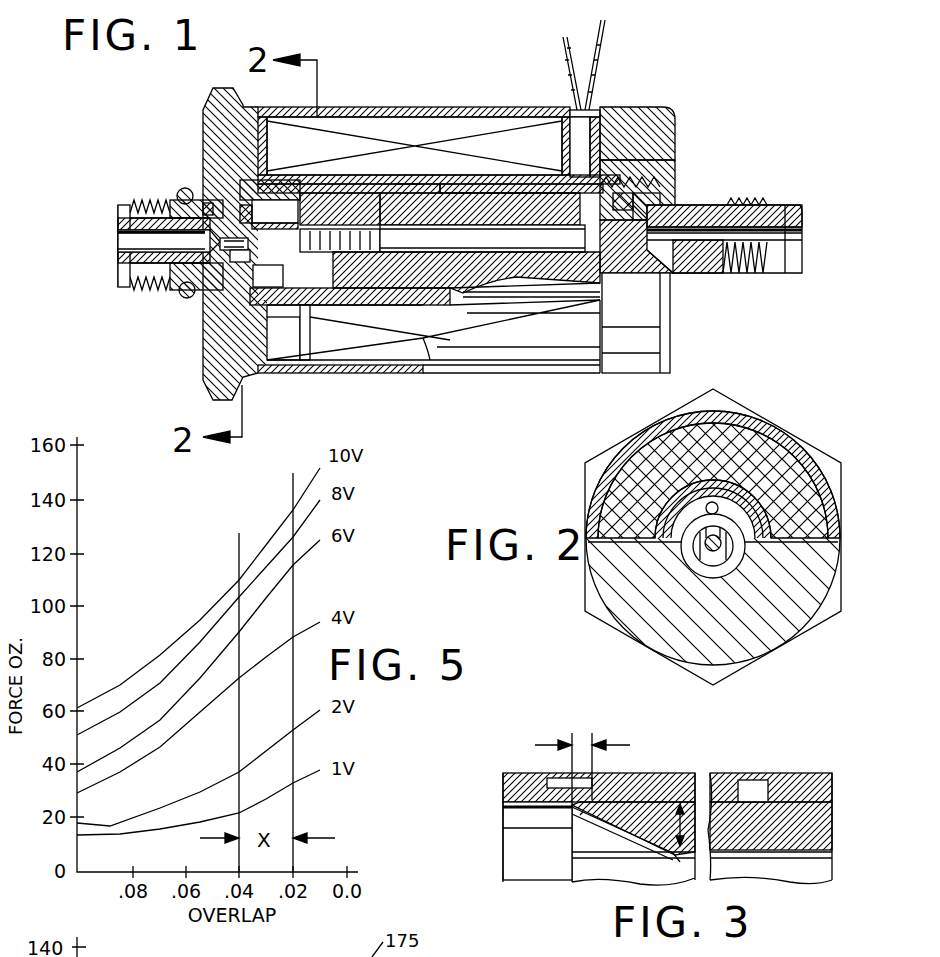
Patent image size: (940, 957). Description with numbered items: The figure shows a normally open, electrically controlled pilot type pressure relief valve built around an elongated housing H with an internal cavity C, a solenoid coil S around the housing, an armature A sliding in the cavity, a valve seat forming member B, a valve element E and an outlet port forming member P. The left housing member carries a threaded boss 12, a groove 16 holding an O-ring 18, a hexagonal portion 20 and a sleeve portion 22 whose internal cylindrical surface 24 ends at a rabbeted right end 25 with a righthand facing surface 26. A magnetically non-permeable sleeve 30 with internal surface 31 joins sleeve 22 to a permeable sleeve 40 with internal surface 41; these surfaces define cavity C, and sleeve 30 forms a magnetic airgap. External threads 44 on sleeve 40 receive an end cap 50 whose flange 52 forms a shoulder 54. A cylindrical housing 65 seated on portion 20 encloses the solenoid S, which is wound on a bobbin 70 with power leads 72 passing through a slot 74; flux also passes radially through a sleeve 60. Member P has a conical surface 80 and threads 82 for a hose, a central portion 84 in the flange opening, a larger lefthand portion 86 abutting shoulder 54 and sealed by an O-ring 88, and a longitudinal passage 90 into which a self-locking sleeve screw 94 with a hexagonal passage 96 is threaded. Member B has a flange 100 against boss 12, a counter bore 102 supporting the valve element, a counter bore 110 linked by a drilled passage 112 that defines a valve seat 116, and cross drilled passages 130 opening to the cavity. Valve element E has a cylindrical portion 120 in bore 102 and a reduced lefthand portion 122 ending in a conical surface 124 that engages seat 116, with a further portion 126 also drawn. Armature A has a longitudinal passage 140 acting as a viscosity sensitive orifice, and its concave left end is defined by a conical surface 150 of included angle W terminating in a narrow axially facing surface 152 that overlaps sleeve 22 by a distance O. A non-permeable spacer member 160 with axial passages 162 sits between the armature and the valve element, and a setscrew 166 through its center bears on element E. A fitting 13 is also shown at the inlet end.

In FIG. 1, the boss 12 is at (128, 210).
In FIG. 1, the inlet fitting 13 is at (150, 210).
In FIG. 1, the groove 16 is at (170, 205).
In FIG. 1, the O-ring 18 is at (183, 188).
In FIG. 1, the hexagonal portion 20 is at (218, 108).
In FIG. 2, the hexagonal portion 20 is at (620, 567).
In FIG. 1, the sleeve portion 22 is at (235, 345).
In FIG. 1, the internal cylindrical surface 24 is at (275, 214).
In FIG. 1, the externally rabbeted right end 25 is at (303, 290).
In FIG. 2, the externally rabbeted right end 25 is at (718, 505).
In FIG. 3, the externally rabbeted right end 25 is at (572, 807).
In FIG. 3, the righthand facing surface 26 is at (583, 814).
In FIG. 1, the sleeve 30 is at (376, 305).
In FIG. 3, the sleeve 30 is at (648, 780).
In FIG. 1, the internal surface 31 is at (410, 305).
In FIG. 3, the internal surface 31 is at (658, 800).
In FIG. 1, the sleeve 40 is at (472, 194).
In FIG. 3, the sleeve 40 is at (782, 778).
In FIG. 1, the internal surface 41 is at (507, 202).
In FIG. 3, the internal surface 41 is at (795, 800).
In FIG. 1, the external threads 44 is at (612, 165).
In FIG. 1, the end cap 50 is at (660, 112).
In FIG. 1, the flange 52 is at (668, 180).
In FIG. 1, the shoulder 54 is at (668, 147).
In FIG. 2, the sleeve 60 is at (702, 431).
In FIG. 1, the cylindrical housing 65 is at (483, 110).
In FIG. 2, the cylindrical housing 65 is at (773, 447).
In FIG. 1, the bobbin 70 is at (397, 172).
In FIG. 2, the bobbin 70 is at (832, 480).
In FIG. 1, the power leads 72 is at (600, 25).
In FIG. 1, the slot 74 is at (590, 110).
In FIG. 1, the conical surface 80 is at (795, 225).
In FIG. 1, the threads 82 is at (770, 212).
In FIG. 1, the central portion 84 is at (685, 200).
In FIG. 1, the lefthand portion 86 is at (630, 190).
In FIG. 1, the O-ring 88 is at (600, 208).
In FIG. 1, the longitudinal passage 90 is at (732, 207).
In FIG. 1, the sleeve screw 94 is at (610, 275).
In FIG. 1, the hexagonally shaped passage 96 is at (562, 254).
In FIG. 1, the flange 100 is at (118, 265).
In FIG. 1, the counter bore 102 is at (243, 263).
In FIG. 1, the counter bore 110 is at (118, 238).
In FIG. 1, the drilled passage 112 is at (162, 285).
In FIG. 1, the valve seat 116 is at (245, 212).
In FIG. 1, the cylindrical portion 120 is at (292, 255).
In FIG. 1, the lefthand portion 122 is at (260, 185).
In FIG. 2, the lefthand portion 122 is at (705, 562).
In FIG. 1, the conical surface 124 is at (225, 280).
In FIG. 1, the bobbin wall 126 is at (322, 260).
In FIG. 1, the cross drilled passages 130 is at (233, 252).
In FIG. 2, the cross drilled passages 130 is at (720, 565).
In FIG. 1, the longitudinal passage 140 is at (482, 240).
In FIG. 1, the conical surface 150 is at (384, 240).
In FIG. 3, the conical surface 150 is at (592, 780).
In FIG. 3, the axially facing surface 152 is at (572, 805).
In FIG. 1, the spacer member 160 is at (302, 200).
In FIG. 2, the spacer member 160 is at (683, 452).
In FIG. 1, the axial passages 162 is at (479, 209).
In FIG. 2, the axial passages 162 is at (715, 455).
In FIG. 1, the setscrew 166 is at (352, 252).
In FIG. 2, the setscrew 166 is at (740, 533).
In FIG. 1, the solenoid armature A is at (445, 208).
In FIG. 1, the valve seat forming member B is at (206, 202).
In FIG. 1, the internal cavity C is at (266, 190).
In FIG. 2, the internal cavity C is at (678, 566).
In FIG. 1, the valve element E is at (268, 276).
In FIG. 1, the housing H is at (405, 190).
In FIG. 3, the overlap distance O is at (582, 747).
In FIG. 1, the outlet port forming member P is at (683, 220).
In FIG. 1, the solenoid coil S is at (461, 140).
In FIG. 2, the solenoid coil S is at (788, 472).
In FIG. 3, the included angle W is at (599, 829).